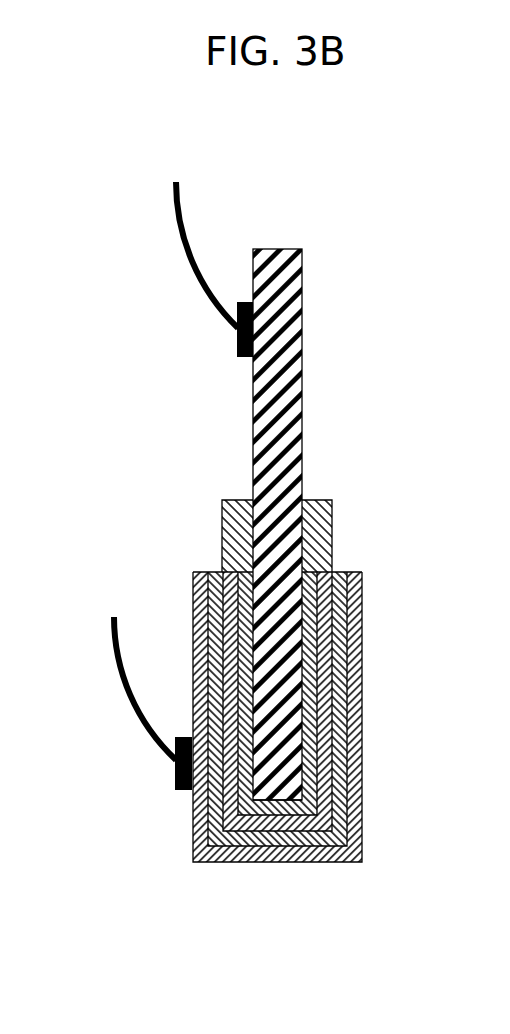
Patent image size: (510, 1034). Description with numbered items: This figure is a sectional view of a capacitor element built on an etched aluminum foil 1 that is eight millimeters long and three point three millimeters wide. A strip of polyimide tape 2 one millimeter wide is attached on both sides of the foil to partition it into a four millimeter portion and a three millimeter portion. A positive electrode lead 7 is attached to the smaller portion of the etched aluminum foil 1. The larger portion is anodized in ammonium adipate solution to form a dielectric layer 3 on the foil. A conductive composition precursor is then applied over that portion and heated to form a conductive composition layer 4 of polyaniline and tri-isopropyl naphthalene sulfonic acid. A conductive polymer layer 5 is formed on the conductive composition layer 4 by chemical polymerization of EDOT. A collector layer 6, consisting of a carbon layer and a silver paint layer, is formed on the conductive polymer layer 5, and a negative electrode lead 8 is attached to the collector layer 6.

The etched aluminum foil 1 is at (258, 415).
The polyimide tape 2 is at (232, 543).
The dielectric layer 3 is at (333, 625).
The conductive composition layer 4 is at (332, 658).
The conductive polymer layer 5 is at (343, 717).
The collector layer 6 is at (358, 784).
The positive electrode lead 7 is at (172, 200).
The negative electrode lead 8 is at (112, 658).